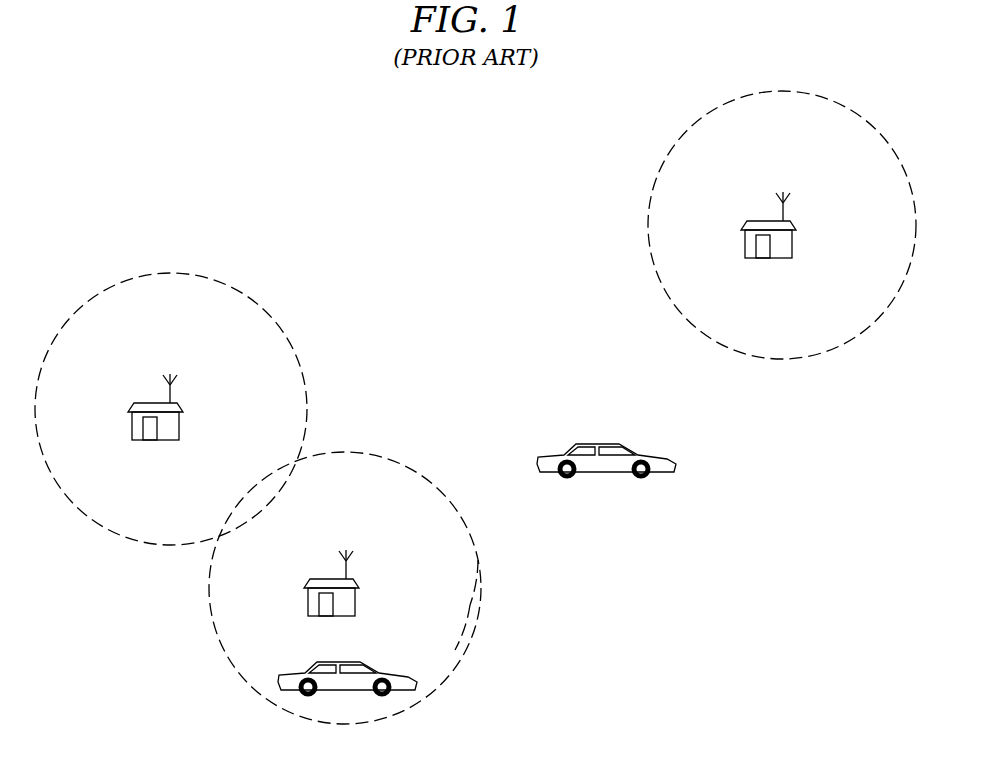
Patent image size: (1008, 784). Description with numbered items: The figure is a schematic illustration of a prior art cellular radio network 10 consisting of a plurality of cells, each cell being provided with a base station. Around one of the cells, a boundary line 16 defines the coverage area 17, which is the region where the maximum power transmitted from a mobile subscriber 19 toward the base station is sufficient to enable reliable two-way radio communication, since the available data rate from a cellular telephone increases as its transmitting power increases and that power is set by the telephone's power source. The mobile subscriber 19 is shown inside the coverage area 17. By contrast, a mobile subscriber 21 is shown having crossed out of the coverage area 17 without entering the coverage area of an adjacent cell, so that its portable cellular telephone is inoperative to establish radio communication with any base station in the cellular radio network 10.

The cellular radio network 10 is at (479, 181).
The boundary line 16 is at (480, 581).
The coverage area 17 is at (463, 625).
The mobile subscriber 19 is at (413, 689).
The mobile subscriber 21 is at (597, 444).